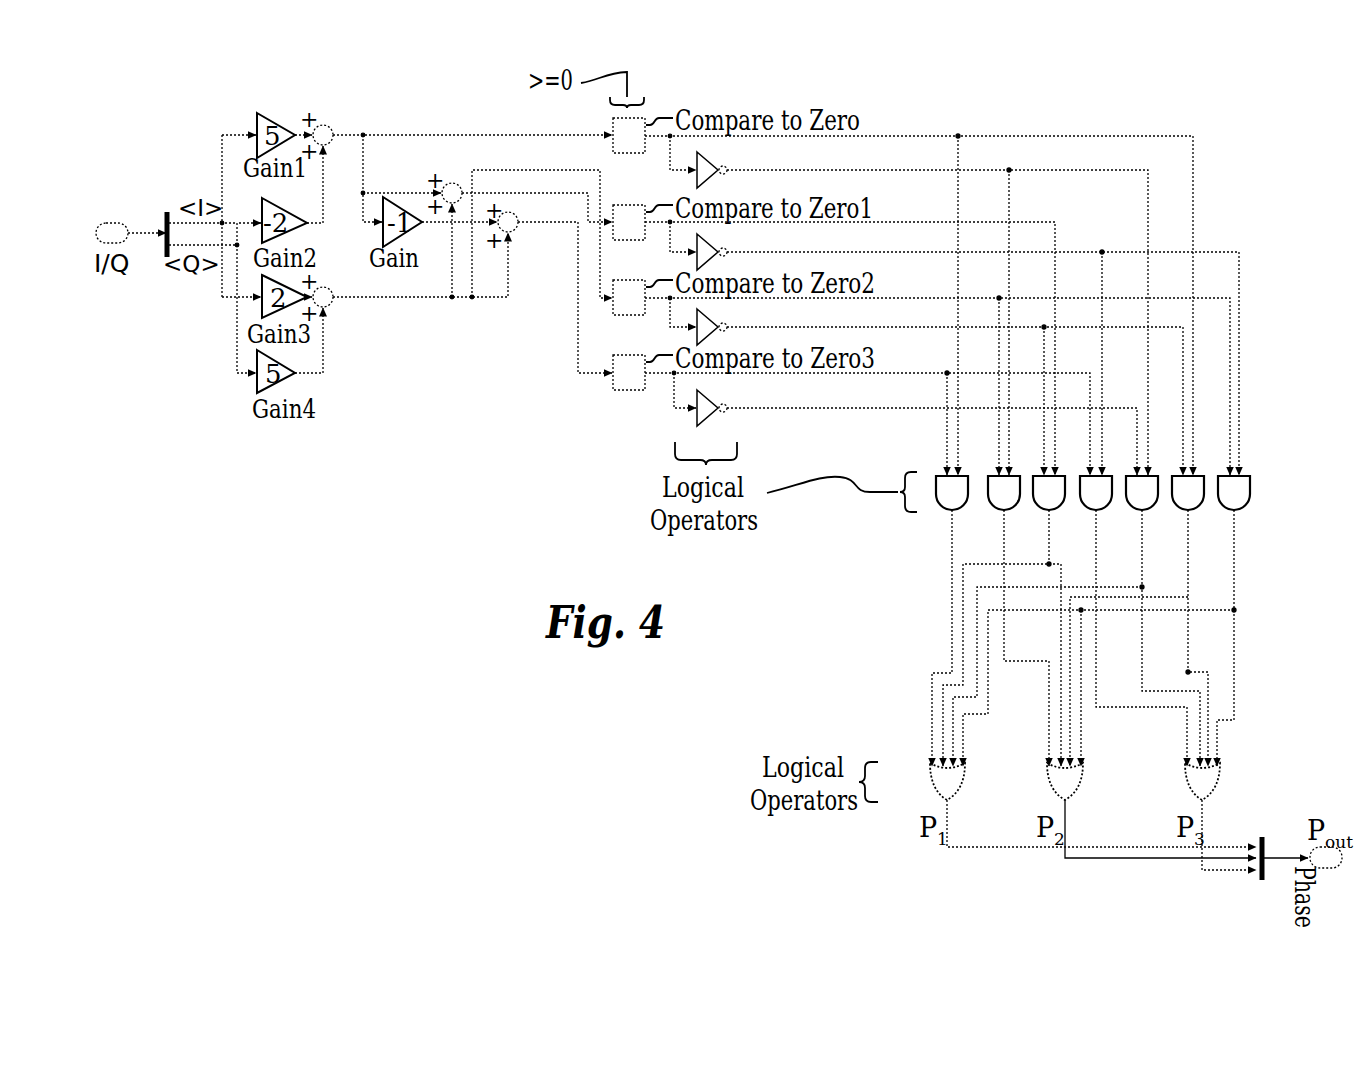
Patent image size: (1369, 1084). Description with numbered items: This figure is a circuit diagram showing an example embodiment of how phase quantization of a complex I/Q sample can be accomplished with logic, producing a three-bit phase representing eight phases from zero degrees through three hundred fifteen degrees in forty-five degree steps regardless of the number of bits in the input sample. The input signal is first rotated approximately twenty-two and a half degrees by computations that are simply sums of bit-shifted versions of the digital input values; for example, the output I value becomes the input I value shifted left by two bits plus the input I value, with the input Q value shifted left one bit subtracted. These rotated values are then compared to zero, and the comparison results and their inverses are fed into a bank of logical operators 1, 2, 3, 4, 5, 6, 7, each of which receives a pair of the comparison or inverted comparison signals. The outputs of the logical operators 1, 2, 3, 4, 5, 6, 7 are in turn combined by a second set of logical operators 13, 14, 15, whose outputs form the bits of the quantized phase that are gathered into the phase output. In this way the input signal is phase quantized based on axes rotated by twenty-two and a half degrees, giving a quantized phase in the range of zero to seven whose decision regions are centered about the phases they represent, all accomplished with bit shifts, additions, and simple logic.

The logical AND operator 1 is at (951, 511).
The logical AND operator 2 is at (1003, 511).
The logical AND operator 3 is at (1049, 511).
The logical AND operator 4 is at (1095, 511).
The logical AND operator 5 is at (1141, 511).
The logical AND operator 6 is at (1187, 511).
The logical AND operator 7 is at (1233, 511).
The logical OR operator 13 is at (1188, 781).
The logical OR operator 14 is at (1049, 781).
The logical OR operator 15 is at (932, 781).